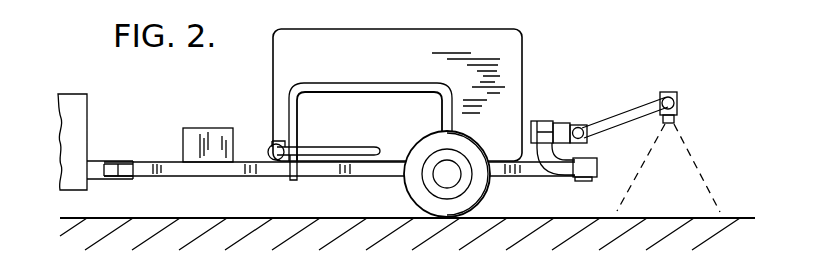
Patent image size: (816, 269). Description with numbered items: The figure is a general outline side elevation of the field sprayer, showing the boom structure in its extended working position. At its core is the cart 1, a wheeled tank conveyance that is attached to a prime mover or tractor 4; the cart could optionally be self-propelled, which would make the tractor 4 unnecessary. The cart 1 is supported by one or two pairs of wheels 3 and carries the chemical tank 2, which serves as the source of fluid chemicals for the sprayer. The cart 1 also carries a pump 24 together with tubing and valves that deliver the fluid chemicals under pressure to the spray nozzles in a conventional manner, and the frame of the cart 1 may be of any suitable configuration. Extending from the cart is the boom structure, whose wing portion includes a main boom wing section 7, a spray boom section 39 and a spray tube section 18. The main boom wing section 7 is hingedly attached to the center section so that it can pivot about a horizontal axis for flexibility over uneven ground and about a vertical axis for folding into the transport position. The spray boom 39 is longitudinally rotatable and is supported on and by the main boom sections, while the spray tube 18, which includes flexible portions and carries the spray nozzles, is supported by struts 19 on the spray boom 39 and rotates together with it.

The cart 1 is at (205, 177).
The chemical tank 2 is at (497, 41).
The wheels 3 is at (408, 184).
The tractor 4 is at (88, 125).
The main boom wing section 7 is at (543, 120).
The spray tube section 18 is at (672, 92).
The struts 19 is at (630, 104).
The pump 24 is at (222, 128).
The spray boom section 39 is at (580, 124).